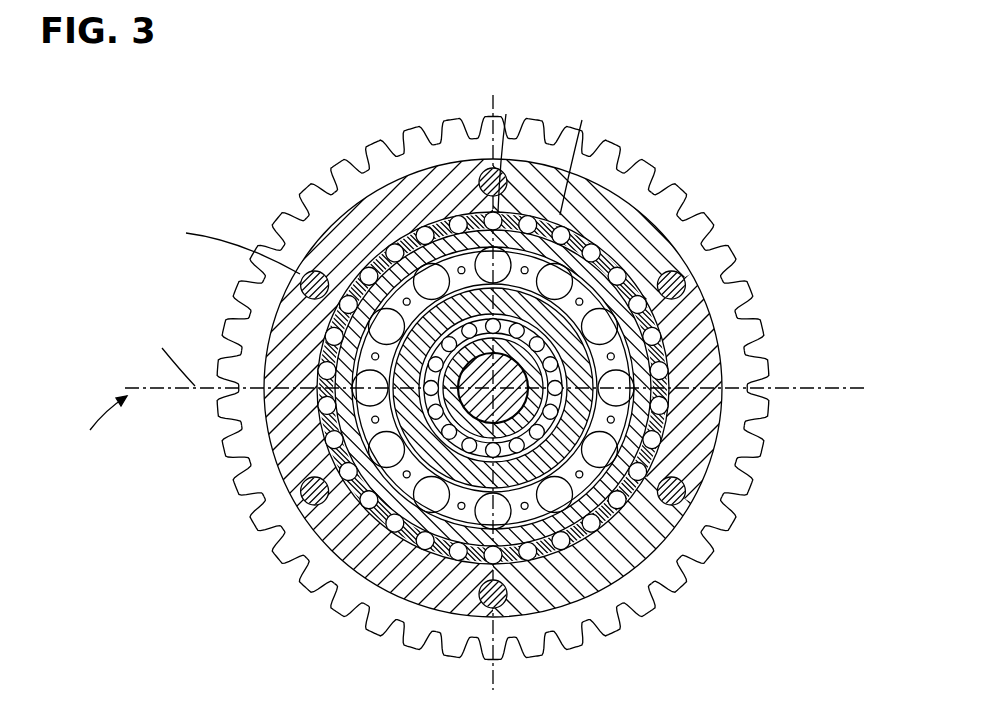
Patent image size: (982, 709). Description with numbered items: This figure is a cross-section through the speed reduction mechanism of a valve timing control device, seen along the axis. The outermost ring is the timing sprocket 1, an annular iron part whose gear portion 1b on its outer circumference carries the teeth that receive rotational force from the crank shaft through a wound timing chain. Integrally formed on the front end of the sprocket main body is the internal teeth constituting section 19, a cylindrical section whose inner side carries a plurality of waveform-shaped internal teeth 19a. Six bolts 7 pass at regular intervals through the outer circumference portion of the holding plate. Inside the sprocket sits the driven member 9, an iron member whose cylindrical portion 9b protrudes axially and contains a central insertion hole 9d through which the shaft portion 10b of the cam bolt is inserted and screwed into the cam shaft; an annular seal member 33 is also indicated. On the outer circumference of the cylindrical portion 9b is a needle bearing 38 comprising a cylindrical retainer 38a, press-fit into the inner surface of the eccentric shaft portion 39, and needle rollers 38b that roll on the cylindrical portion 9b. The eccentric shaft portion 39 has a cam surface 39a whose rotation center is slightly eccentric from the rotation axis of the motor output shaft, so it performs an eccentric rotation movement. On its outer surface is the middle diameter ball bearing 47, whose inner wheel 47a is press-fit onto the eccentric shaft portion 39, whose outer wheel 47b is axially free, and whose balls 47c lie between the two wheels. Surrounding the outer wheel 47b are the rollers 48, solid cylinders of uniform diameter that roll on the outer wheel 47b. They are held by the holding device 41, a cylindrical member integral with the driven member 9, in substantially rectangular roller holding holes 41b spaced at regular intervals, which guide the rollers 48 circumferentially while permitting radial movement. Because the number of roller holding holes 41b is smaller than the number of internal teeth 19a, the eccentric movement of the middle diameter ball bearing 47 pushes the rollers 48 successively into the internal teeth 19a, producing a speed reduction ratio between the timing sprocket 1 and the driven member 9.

The timing sprocket 1 is at (748, 265).
The gear portion 1b is at (668, 190).
The bolt 7 is at (491, 168).
The driven member 9 is at (292, 446).
The cylindrical portion 9b is at (345, 522).
The insertion hole 9d is at (380, 315).
The shaft portion 10b is at (420, 552).
The internal teeth constituting section 19 is at (636, 420).
The internal teeth 19a is at (520, 248).
The annular seal member 33 is at (640, 410).
The needle bearing 38 is at (541, 472).
The retainer 38a is at (487, 540).
The needle rollers 38b is at (450, 520).
The eccentric shaft portion 39 is at (742, 252).
The cam surface 39a is at (572, 522).
The holding device 41 is at (620, 250).
The roller holding holes 41b is at (686, 262).
The middle diameter ball bearing 47 is at (322, 396).
The inner wheel 47a is at (612, 517).
The outer wheel 47b is at (647, 470).
The balls 47c is at (655, 298).
The rollers 48 is at (584, 236).